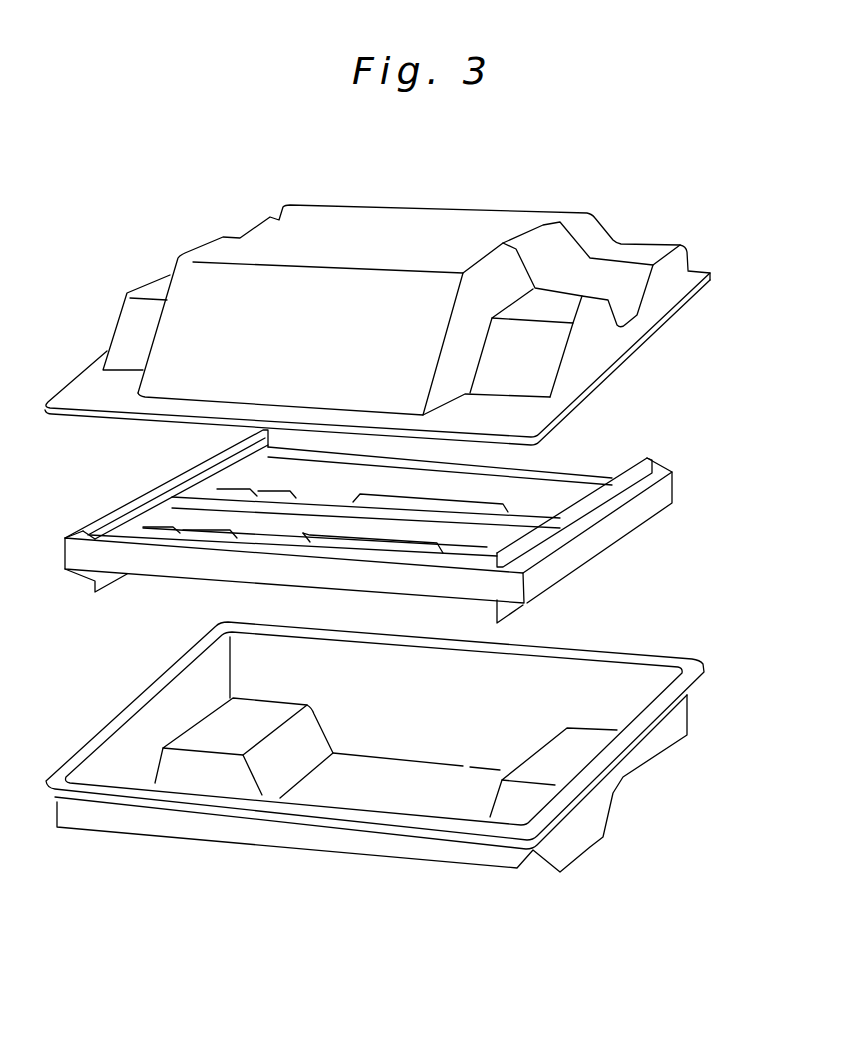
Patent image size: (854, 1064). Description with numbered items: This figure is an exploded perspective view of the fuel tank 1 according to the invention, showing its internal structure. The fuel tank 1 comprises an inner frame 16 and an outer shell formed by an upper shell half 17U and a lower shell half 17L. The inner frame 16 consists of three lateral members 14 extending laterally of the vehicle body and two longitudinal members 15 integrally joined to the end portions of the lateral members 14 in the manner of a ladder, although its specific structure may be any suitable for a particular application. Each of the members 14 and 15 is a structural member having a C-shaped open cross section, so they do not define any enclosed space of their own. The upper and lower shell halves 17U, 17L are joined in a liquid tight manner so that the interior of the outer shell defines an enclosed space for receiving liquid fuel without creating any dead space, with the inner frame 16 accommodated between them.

The fuel tank 1 is at (700, 197).
The upper shell half 17U is at (480, 215).
The inner frame 16 is at (680, 407).
The lateral members 14 is at (497, 560).
The longitudinal members 15 is at (120, 508).
The lower shell half 17L is at (468, 860).